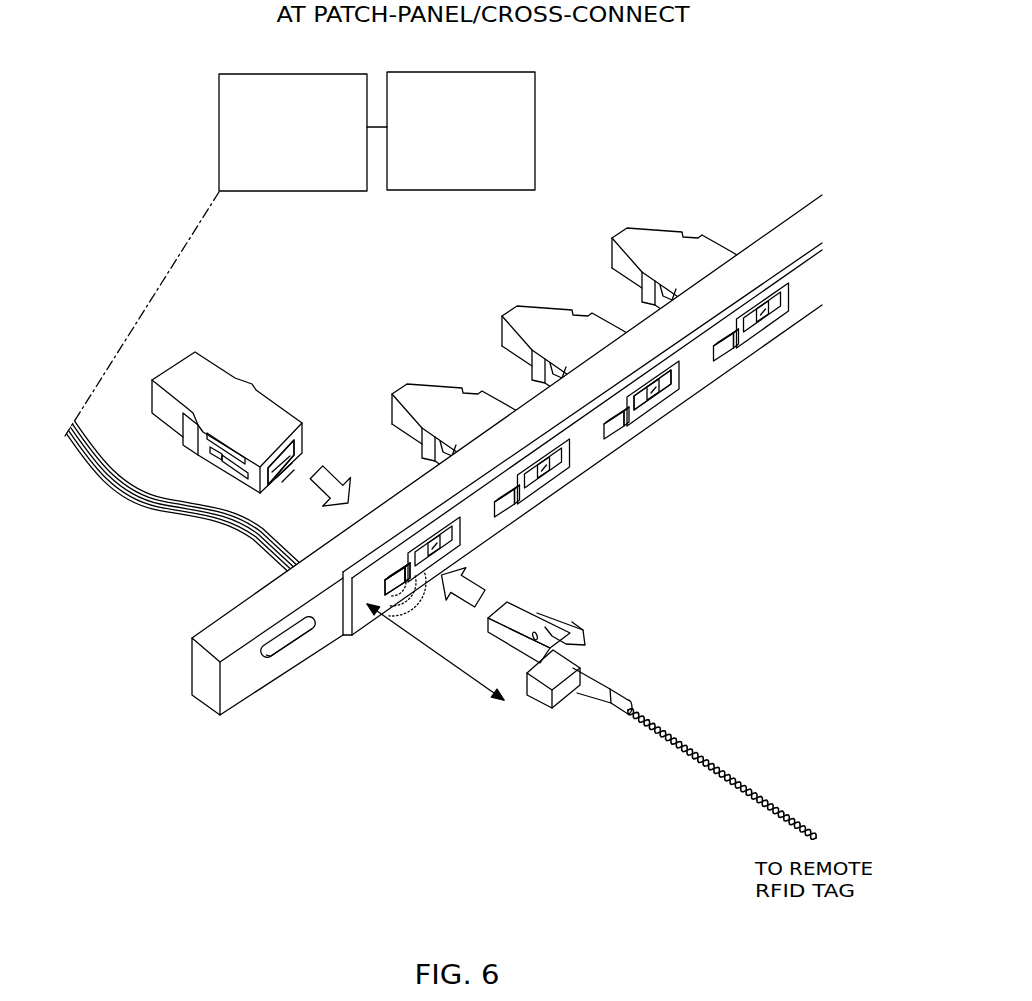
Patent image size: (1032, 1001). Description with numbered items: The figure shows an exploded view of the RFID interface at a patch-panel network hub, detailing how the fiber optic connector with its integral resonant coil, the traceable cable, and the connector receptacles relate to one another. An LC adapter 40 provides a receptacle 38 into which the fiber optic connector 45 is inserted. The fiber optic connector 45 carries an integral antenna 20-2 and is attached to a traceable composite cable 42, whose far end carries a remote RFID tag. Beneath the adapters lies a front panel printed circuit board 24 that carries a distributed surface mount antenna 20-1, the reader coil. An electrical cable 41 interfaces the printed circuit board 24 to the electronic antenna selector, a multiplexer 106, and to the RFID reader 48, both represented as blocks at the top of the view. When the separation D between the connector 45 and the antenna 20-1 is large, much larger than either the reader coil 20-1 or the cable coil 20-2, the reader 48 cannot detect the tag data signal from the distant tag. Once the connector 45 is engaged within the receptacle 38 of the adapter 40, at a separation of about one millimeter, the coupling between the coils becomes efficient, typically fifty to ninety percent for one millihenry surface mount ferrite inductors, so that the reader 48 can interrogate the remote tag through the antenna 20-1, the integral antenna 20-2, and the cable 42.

The multiplexer 106 is at (293, 132).
The RFID reader 48 is at (461, 131).
The front panel printed circuit board 24 is at (360, 607).
The distributed surface mount antenna 20-1 is at (397, 585).
The integral antenna 20-2 is at (532, 707).
The LC adapter 40 is at (232, 410).
The receptacle 38 is at (273, 465).
The electrical cable 41 is at (125, 508).
The fiber optic connector 45 is at (512, 623).
The traceable composite cable 42 is at (677, 771).